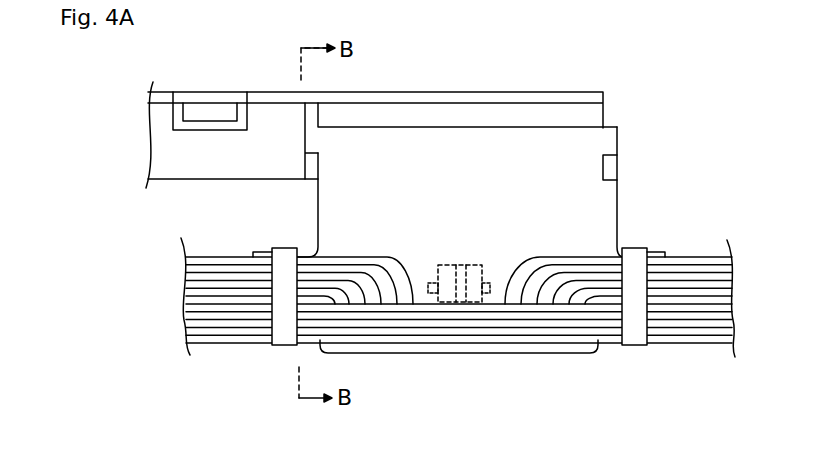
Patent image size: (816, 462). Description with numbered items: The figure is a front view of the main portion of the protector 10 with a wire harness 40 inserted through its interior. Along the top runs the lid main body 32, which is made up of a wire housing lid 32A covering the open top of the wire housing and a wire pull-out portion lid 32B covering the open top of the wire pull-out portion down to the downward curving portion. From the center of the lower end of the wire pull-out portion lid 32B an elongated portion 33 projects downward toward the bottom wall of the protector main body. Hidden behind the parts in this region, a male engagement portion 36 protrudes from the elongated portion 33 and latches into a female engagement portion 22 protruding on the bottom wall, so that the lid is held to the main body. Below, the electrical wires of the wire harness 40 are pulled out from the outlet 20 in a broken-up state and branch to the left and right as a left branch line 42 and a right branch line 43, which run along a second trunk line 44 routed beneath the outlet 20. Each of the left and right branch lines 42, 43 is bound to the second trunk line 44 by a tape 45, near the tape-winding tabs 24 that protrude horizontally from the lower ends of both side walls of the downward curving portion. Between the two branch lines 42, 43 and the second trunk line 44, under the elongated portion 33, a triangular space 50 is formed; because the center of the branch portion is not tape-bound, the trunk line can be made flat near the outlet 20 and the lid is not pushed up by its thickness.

The protector 10 is at (413, 90).
The lid main body 32 is at (440, 106).
The wire housing lid 32A is at (538, 92).
The wire pull-out portion lid 32B is at (538, 155).
The outlet 20 is at (367, 258).
The second trunk line 44 is at (500, 348).
The wire harness 40 is at (690, 346).
The left branch line 42 is at (225, 255).
The right branch line 43 is at (695, 255).
The triangular space 50 is at (397, 293).
The elongated portion 33 is at (503, 293).
The tape 45 is at (283, 348).
The tape-winding tabs 24 is at (264, 252).
The female engagement portion 22 is at (445, 302).
The male engagement portion 36 is at (472, 302).